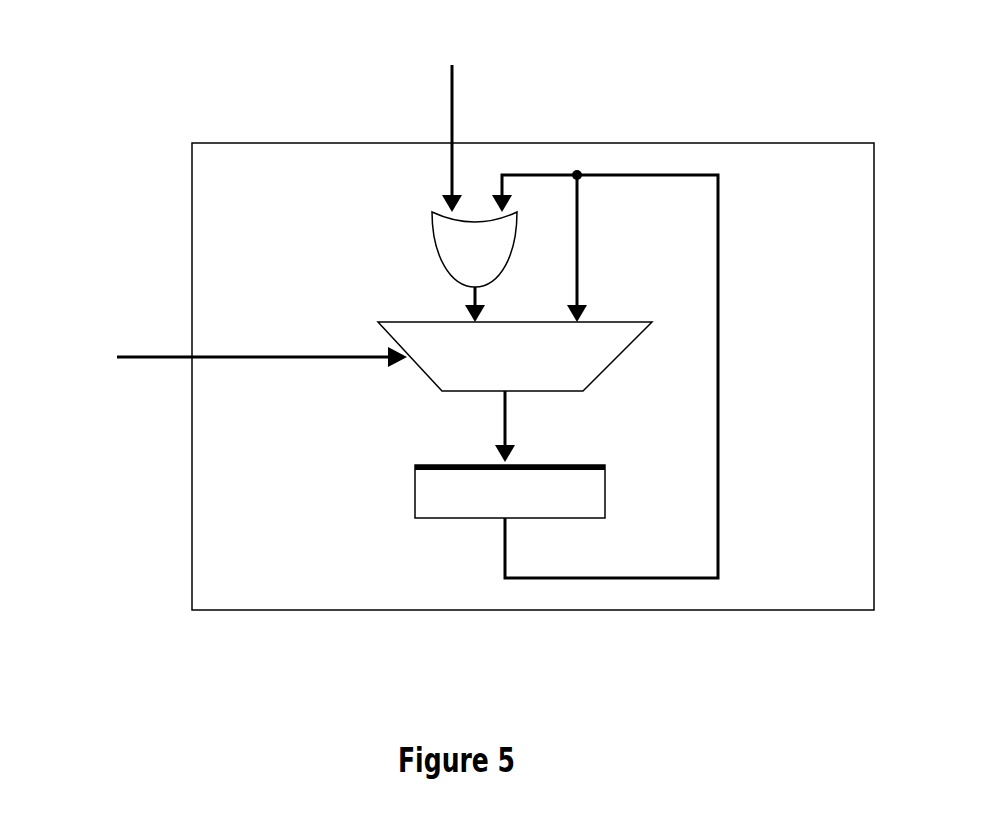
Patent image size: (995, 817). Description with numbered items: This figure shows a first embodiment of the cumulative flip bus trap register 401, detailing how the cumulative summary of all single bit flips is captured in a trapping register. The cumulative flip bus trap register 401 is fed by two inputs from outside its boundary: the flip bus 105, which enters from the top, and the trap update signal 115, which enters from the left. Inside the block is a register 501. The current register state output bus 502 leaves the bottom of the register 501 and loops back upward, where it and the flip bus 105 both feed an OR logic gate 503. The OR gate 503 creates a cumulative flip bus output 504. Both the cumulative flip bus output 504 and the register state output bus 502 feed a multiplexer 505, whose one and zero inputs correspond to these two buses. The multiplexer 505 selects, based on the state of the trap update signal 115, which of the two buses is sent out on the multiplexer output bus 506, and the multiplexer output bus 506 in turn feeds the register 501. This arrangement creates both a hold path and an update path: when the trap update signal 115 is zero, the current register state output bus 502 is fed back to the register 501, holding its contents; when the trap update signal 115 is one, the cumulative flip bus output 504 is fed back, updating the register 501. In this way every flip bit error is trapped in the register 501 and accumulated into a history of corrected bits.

The cumulative flip bus trap register 401 is at (242, 223).
The flip bus 105 is at (453, 132).
The trap update signal 115 is at (177, 349).
The OR 503 is at (458, 267).
The cumulative flip bus output 504 is at (467, 305).
The multiplexer 505 is at (443, 367).
The multiplexer output bus 506 is at (495, 415).
The register 501 is at (432, 497).
The current register state output bus 502 is at (723, 413).